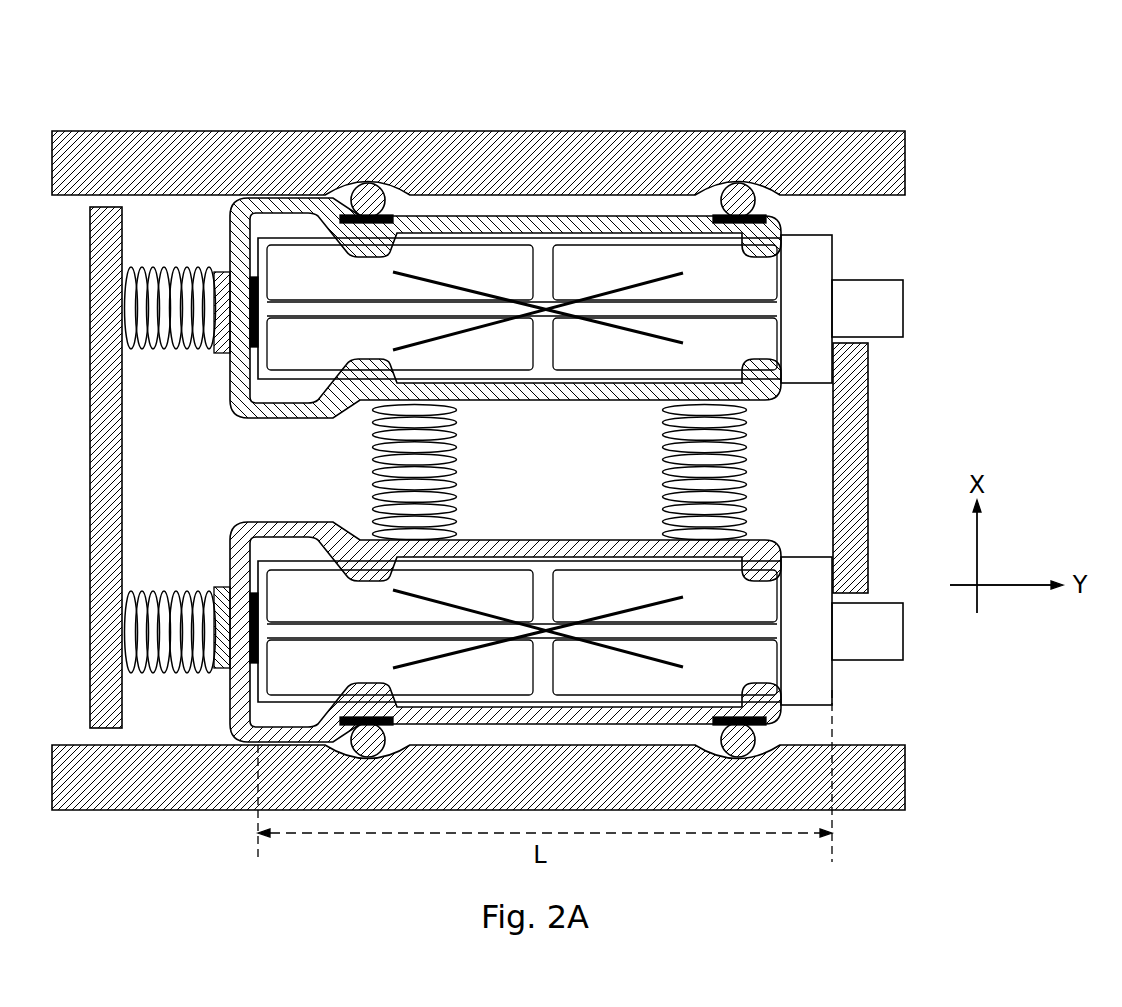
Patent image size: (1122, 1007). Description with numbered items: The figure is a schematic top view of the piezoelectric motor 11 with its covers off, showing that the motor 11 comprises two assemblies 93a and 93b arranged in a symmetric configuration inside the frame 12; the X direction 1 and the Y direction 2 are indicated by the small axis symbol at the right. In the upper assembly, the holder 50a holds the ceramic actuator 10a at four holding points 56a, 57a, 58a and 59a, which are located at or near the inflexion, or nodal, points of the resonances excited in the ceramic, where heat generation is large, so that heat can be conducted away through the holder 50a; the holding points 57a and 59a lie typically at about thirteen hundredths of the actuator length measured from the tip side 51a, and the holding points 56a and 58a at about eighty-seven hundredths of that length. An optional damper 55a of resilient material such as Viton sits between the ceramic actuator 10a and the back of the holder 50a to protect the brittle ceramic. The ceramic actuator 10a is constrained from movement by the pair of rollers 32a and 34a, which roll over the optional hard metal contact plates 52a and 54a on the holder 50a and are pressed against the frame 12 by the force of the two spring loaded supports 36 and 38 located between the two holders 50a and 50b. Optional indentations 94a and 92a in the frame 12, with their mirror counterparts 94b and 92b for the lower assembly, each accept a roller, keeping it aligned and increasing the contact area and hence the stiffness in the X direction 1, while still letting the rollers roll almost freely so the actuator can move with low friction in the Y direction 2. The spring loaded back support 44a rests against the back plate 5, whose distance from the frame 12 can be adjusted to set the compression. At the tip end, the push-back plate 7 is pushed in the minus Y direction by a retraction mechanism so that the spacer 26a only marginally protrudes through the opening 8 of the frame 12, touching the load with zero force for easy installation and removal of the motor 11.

The X direction 1 is at (978, 522).
The Y direction 2 is at (1040, 582).
The back plate 5 is at (122, 500).
The push-back plate 7 is at (868, 423).
The opening 8 is at (893, 745).
The ceramic actuator 10a is at (497, 255).
The motor 11 is at (1046, 190).
The frame 12 is at (588, 135).
The spacer 26a is at (889, 322).
The roller 32a is at (724, 190).
The roller 34a is at (340, 192).
The spring loaded support 36 is at (660, 478).
The spring loaded support 38 is at (460, 452).
The spring loaded back support 44a is at (160, 352).
The holder 50a is at (272, 420).
The holder 50b is at (322, 536).
The tip side 51a is at (833, 255).
The contact plate 52a is at (716, 216).
The contact plate 54a is at (342, 216).
The damper 55a is at (228, 276).
The holding point 56a is at (345, 256).
The holding point 57a is at (761, 258).
The holding point 58a is at (368, 358).
The holding point 59a is at (745, 370).
The indentation 92a is at (758, 188).
The indentation 92b is at (768, 757).
The assembly 93a is at (220, 220).
The assembly 93b is at (224, 731).
The indentation 94a is at (392, 188).
The indentation 94b is at (378, 757).